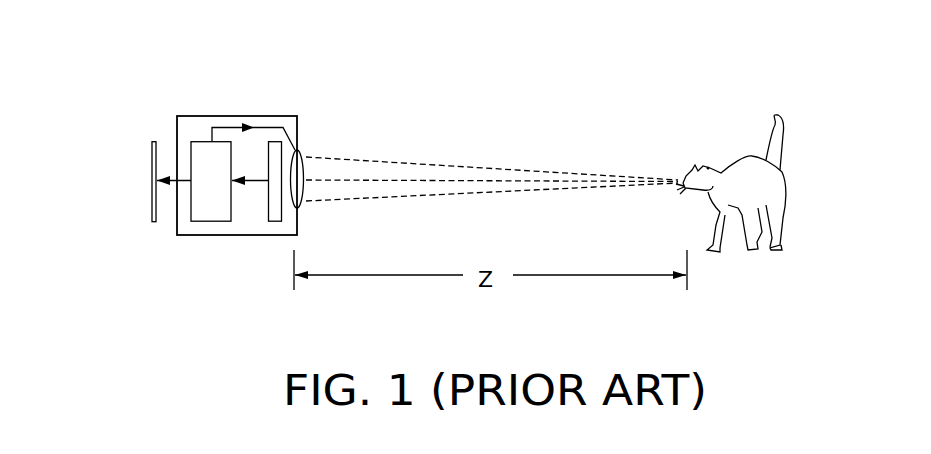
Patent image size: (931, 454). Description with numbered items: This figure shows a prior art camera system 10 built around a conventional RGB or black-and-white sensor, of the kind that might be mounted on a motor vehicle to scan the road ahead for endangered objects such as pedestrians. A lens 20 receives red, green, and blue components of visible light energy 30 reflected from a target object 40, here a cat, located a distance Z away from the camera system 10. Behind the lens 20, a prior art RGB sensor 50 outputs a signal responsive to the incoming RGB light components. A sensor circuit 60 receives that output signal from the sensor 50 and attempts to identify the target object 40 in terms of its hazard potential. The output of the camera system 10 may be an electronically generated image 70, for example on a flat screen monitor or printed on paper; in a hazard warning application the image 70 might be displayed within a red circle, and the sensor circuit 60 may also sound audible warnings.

The rangefinder / measurement device 10 is at (266, 92).
The lens 20 is at (310, 177).
The visible light energy 30 is at (458, 155).
The target object 40 is at (740, 130).
The RGB sensor 50 is at (276, 222).
The sensor circuit 60 is at (215, 222).
The image 70 is at (151, 191).